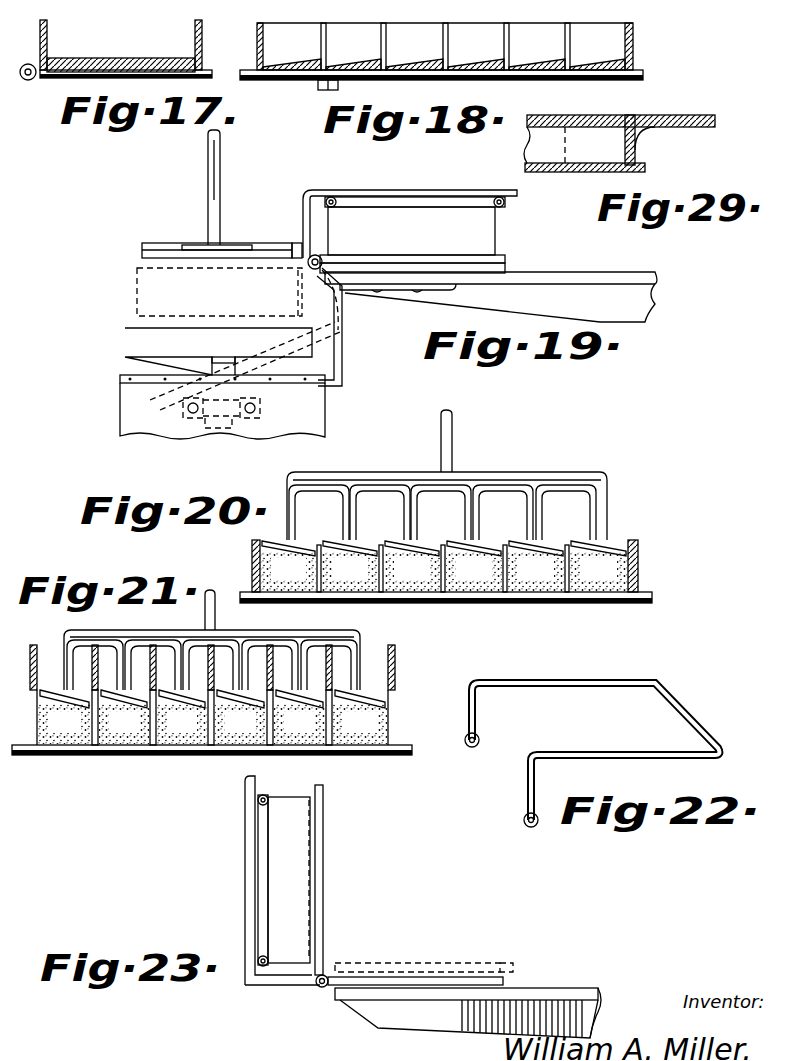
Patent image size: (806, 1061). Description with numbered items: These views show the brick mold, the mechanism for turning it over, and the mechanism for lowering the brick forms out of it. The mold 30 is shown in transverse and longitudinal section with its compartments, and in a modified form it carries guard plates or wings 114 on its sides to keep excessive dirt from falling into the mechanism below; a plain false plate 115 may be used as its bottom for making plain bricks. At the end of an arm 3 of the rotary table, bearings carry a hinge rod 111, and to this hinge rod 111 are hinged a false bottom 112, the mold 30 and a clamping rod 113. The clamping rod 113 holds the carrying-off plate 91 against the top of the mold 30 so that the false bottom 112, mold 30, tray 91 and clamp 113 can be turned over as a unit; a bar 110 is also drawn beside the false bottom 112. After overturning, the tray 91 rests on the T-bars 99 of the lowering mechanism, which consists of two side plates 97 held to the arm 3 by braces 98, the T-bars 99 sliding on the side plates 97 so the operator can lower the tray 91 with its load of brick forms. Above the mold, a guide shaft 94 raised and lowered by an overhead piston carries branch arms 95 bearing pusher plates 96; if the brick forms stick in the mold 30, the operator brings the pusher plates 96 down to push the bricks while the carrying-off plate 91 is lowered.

In FIG. 19, the arm 3 is at (491, 297).
In FIG. 23, the arm 3 is at (468, 1013).
In FIG. 17, the mold 30 is at (205, 35).
In FIG. 18, the mold 30 is at (640, 52).
In FIG. 19, the mold 30 is at (316, 261).
In FIG. 20, the mold 30 is at (640, 578).
In FIG. 21, the mold 30 is at (396, 672).
In FIG. 23, the mold 30 is at (289, 880).
In FIG. 19, the carrying-off plate 91 is at (216, 168).
In FIG. 20, the carrying-off plate 91 is at (540, 604).
In FIG. 21, the carrying-off plate 91 is at (206, 760).
In FIG. 23, the carrying-off plate 91 is at (268, 888).
In FIG. 20, the guide shaft 94 is at (451, 456).
In FIG. 21, the guide shaft 94 is at (216, 600).
In FIG. 19, the branch arms 95 is at (212, 212).
In FIG. 20, the branch arms 95 is at (600, 508).
In FIG. 21, the branch arms 95 is at (363, 660).
In FIG. 19, the pusher plates 96 is at (170, 242).
In FIG. 20, the pusher plates 96 is at (618, 541).
In FIG. 21, the pusher plates 96 is at (382, 701).
In FIG. 19, the side plates 97 is at (222, 407).
In FIG. 19, the braces 98 is at (342, 366).
In FIG. 19, the T-bars 99 is at (145, 345).
In FIG. 19, the bar 110 is at (478, 268).
In FIG. 23, the bar 110 is at (505, 983).
In FIG. 19, the hinge rod 111 is at (283, 256).
In FIG. 23, the hinge rod 111 is at (320, 990).
In FIG. 17, the false bottom 112 is at (72, 68).
In FIG. 18, the false bottom 112 is at (312, 72).
In FIG. 19, the false bottom 112 is at (470, 257).
In FIG. 23, the false bottom 112 is at (358, 870).
In FIG. 19, the clamping rod 113 is at (370, 191).
In FIG. 22, the clamping rod 113 is at (672, 708).
In FIG. 23, the clamping rod 113 is at (250, 858).
In FIG. 29, the guard plates or wings 114 is at (690, 108).
In FIG. 29, the plain false plate 115 is at (645, 166).